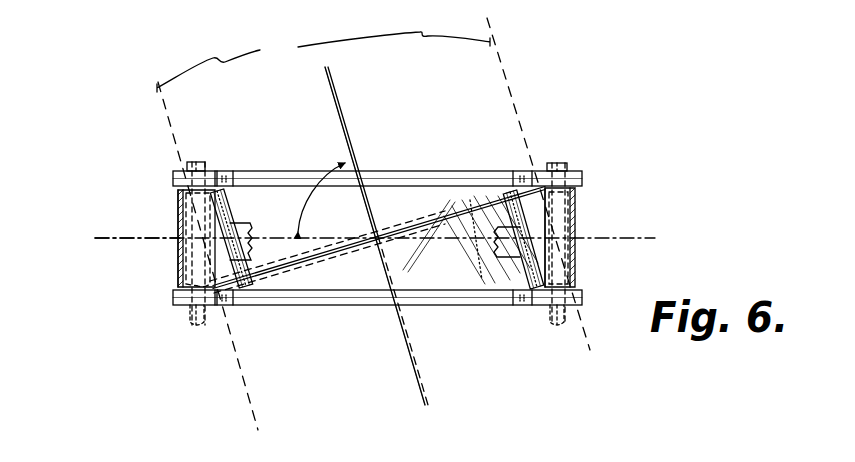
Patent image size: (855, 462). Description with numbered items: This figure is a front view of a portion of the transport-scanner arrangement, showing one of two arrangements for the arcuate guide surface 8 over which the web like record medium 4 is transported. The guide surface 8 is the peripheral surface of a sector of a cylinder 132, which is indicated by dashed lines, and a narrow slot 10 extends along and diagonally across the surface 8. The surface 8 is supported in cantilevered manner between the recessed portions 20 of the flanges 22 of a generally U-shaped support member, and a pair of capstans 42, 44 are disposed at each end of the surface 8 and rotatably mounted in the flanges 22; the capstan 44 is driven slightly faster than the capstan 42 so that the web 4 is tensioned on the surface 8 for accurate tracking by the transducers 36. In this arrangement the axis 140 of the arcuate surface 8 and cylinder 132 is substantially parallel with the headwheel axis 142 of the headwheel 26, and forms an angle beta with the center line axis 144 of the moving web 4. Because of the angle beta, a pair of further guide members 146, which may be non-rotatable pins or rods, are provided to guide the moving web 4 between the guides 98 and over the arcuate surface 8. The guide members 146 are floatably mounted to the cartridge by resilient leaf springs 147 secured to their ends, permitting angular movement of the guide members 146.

The web like record medium 4 is at (442, 272).
The arcuate guide surface 8 is at (450, 190).
The narrow slot 10 is at (568, 207).
The recessed portions 20 is at (246, 171).
The flanges 22 is at (216, 170).
The headwheel 26 is at (404, 222).
The transducers 36 is at (368, 252).
The capstan 42 is at (197, 162).
The capstan 44 is at (557, 165).
The guides 98 is at (200, 208).
The cylinder 132 is at (323, 62).
The axis 140 is at (329, 83).
The headwheel axis 142 is at (325, 98).
The center line axis 144 is at (108, 240).
The guide members 146 is at (227, 197).
The resilient leaf springs 147 is at (240, 228).
The angle beta is at (318, 212).